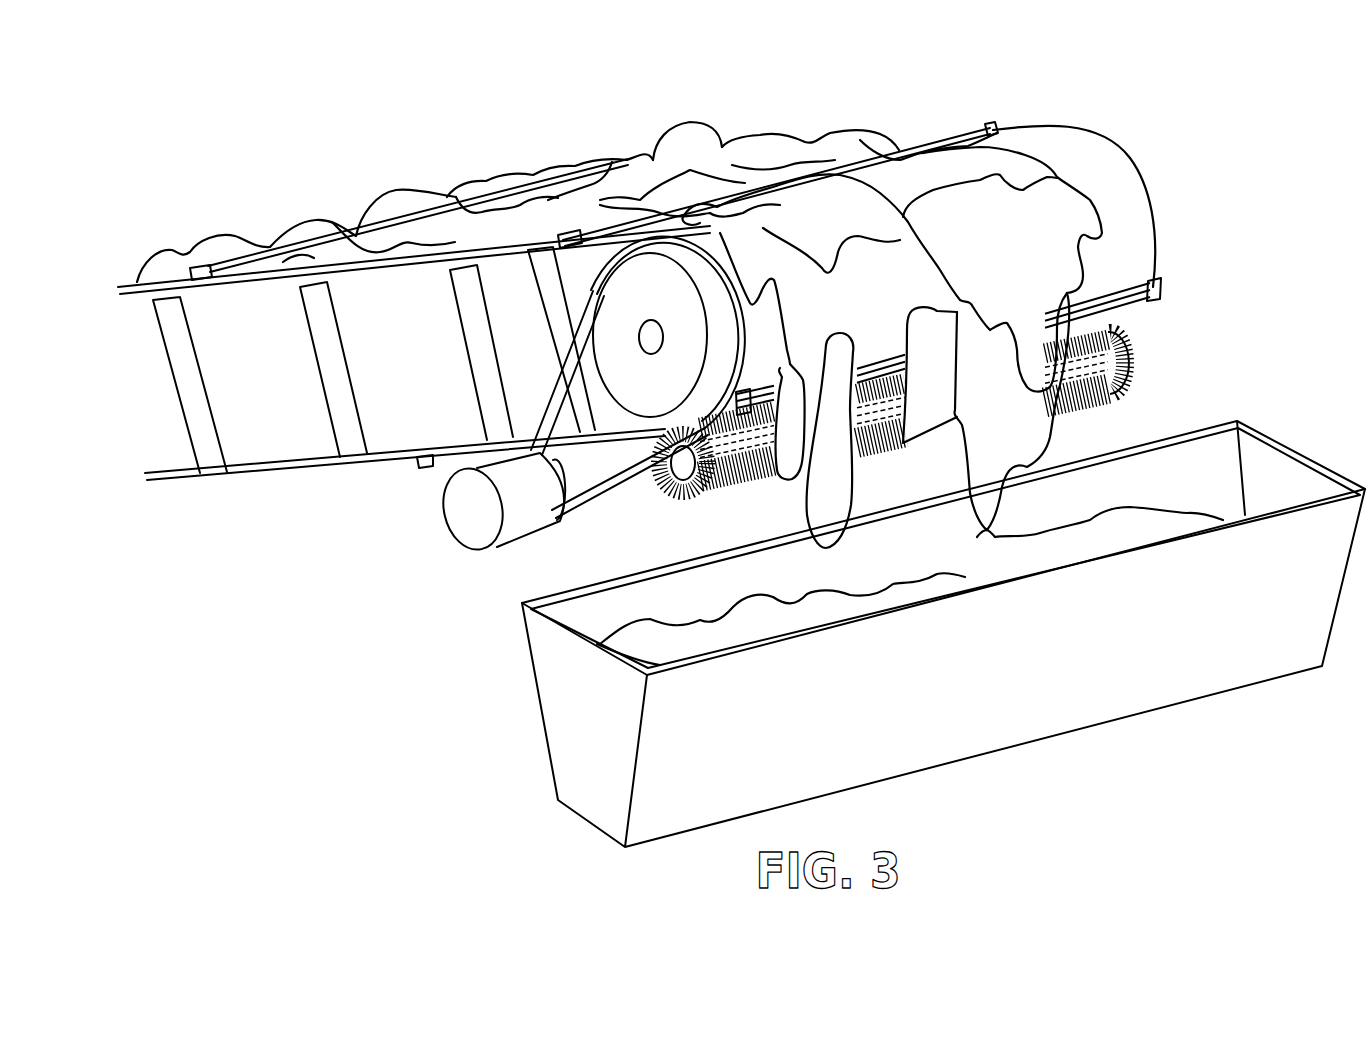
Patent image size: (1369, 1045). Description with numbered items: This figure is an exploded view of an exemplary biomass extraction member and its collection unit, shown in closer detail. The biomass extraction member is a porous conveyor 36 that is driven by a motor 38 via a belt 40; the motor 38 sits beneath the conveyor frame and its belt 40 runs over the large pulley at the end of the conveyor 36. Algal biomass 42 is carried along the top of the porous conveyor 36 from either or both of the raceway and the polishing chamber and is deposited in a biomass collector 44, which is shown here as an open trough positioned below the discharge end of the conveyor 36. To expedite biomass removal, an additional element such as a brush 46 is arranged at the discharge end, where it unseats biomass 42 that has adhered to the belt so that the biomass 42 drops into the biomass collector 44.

The conveyor 36 is at (398, 158).
The motor 38 is at (475, 515).
The belt 40 is at (585, 480).
The algal biomass 42 is at (700, 157).
The biomass collector 44 is at (952, 702).
The brush 46 is at (1130, 393).